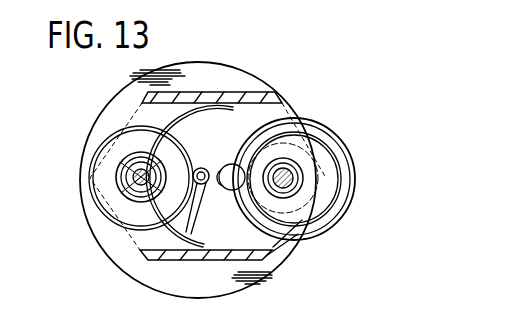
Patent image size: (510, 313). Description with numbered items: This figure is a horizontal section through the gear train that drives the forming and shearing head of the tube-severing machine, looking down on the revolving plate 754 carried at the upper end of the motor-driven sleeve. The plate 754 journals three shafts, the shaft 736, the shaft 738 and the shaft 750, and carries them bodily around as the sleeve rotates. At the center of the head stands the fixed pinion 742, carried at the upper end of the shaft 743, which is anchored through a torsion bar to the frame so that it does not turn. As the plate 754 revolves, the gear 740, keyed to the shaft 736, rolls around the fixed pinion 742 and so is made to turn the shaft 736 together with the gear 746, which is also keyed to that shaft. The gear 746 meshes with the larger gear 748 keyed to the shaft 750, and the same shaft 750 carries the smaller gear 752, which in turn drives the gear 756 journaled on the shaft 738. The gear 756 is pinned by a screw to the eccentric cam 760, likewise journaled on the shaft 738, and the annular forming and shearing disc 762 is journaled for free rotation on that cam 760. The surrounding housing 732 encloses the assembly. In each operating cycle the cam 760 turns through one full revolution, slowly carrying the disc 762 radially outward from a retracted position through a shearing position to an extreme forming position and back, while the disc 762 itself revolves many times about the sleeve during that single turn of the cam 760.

The housing 732 is at (112, 90).
The larger gear 748 is at (156, 102).
The gear 740 is at (102, 180).
The gear 746 is at (114, 155).
The shaft 736 is at (152, 199).
The fixed pinion 742 is at (203, 168).
The shaft 743 is at (187, 226).
The shaft 750 is at (232, 196).
The smaller gear 752 is at (222, 188).
The annular forming and shearing disc 762 is at (345, 149).
The gear 756 is at (316, 152).
The eccentric cam 760 is at (307, 177).
The shaft 738 is at (292, 183).
The plate 754 is at (296, 251).